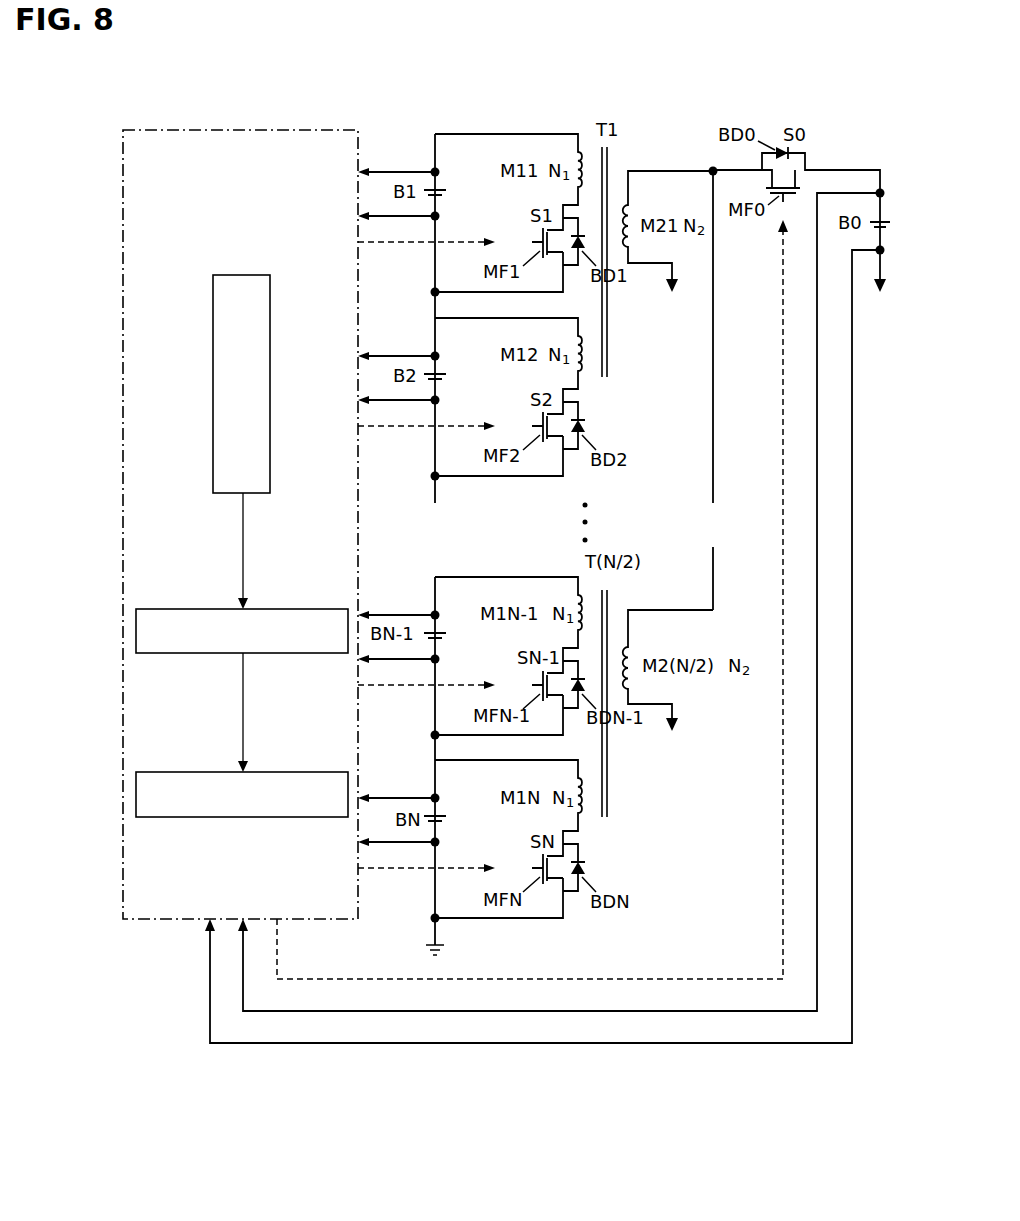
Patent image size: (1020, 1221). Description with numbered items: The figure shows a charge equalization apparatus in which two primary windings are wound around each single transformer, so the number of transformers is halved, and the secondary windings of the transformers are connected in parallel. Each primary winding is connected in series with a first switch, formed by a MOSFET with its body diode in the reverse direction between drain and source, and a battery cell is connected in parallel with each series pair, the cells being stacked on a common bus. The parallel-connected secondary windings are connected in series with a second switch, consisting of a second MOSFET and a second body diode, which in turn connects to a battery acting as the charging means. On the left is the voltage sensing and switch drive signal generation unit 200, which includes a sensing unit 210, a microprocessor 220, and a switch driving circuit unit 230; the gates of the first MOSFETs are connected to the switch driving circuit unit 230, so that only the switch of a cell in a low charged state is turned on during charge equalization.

The voltage sensing and switch drive signal generation unit 200 is at (243, 130).
The sensing unit 210 is at (213, 388).
The microprocessor 220 is at (136, 632).
The switch driving circuit unit 230 is at (136, 795).